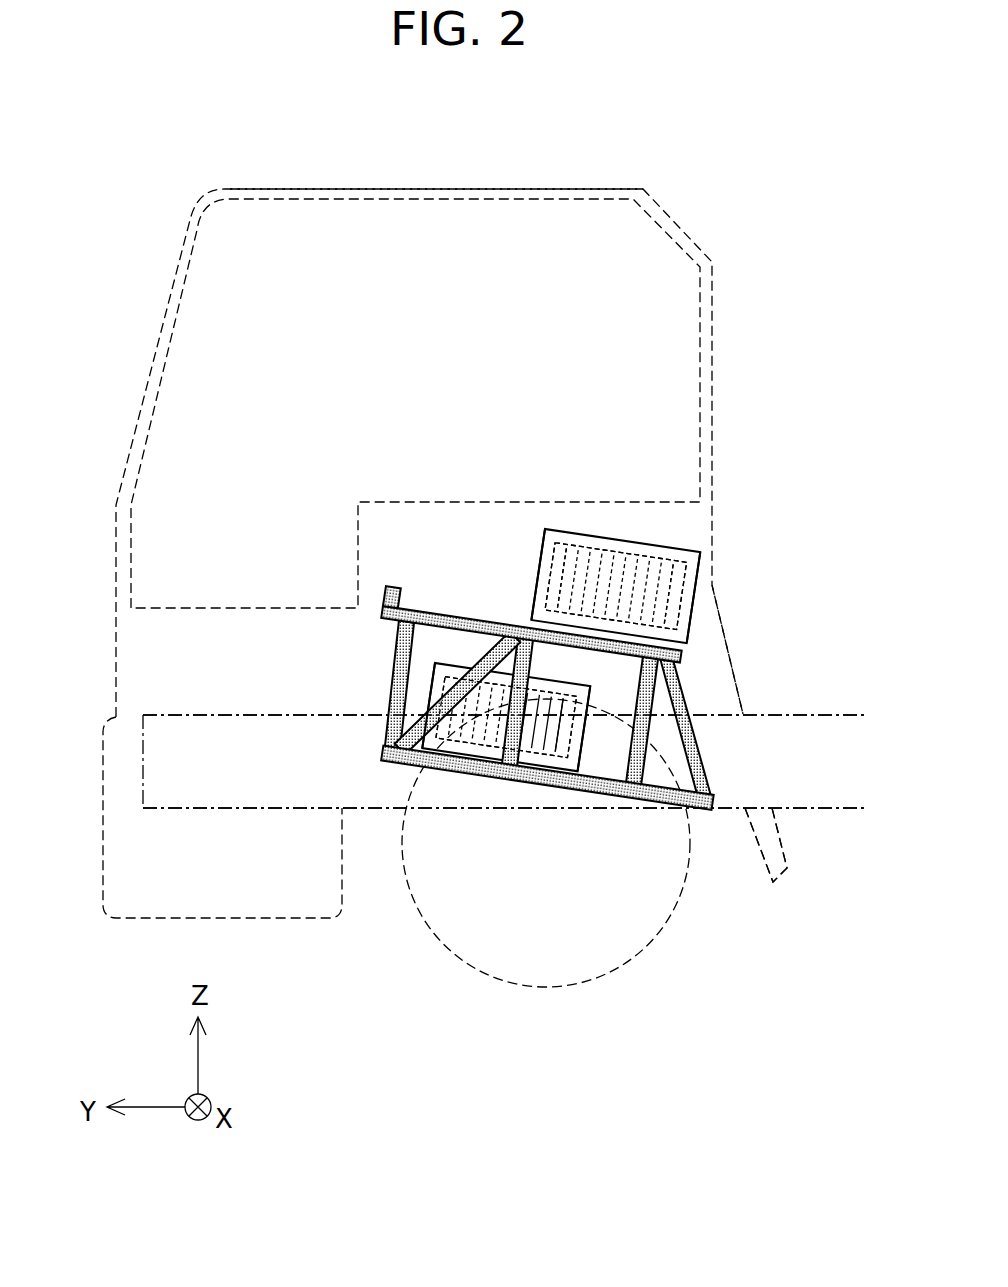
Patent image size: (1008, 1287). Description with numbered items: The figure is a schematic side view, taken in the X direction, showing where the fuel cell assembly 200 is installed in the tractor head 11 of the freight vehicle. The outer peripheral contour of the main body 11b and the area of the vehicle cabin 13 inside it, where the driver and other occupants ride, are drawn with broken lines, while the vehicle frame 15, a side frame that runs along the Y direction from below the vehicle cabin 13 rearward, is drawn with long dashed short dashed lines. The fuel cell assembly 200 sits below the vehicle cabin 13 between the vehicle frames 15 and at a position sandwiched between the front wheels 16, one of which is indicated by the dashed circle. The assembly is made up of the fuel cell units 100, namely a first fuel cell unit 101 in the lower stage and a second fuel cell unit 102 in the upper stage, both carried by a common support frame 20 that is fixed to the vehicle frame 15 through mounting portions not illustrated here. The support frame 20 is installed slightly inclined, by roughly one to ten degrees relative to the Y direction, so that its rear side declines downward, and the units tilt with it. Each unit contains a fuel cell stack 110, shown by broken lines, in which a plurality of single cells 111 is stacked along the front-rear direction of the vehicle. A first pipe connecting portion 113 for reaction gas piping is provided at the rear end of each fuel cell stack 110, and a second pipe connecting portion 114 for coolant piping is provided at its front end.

The tractor head 11 is at (190, 175).
The main body 11b is at (450, 189).
The vehicle cabin 13 is at (405, 344).
The vehicle frame 15 is at (768, 715).
The front wheel 16 is at (570, 972).
The fuel cell assembly 200 is at (438, 522).
The support frame 20 is at (442, 608).
The fuel cell unit 100 is at (537, 632).
The first fuel cell unit 101 is at (438, 664).
The second fuel cell unit 102 is at (668, 545).
The fuel cell stack 110 is at (618, 552).
The single cell 111 is at (597, 550).
The first pipe connecting portion 113 is at (698, 583).
The second pipe connecting portion 114 is at (540, 572).